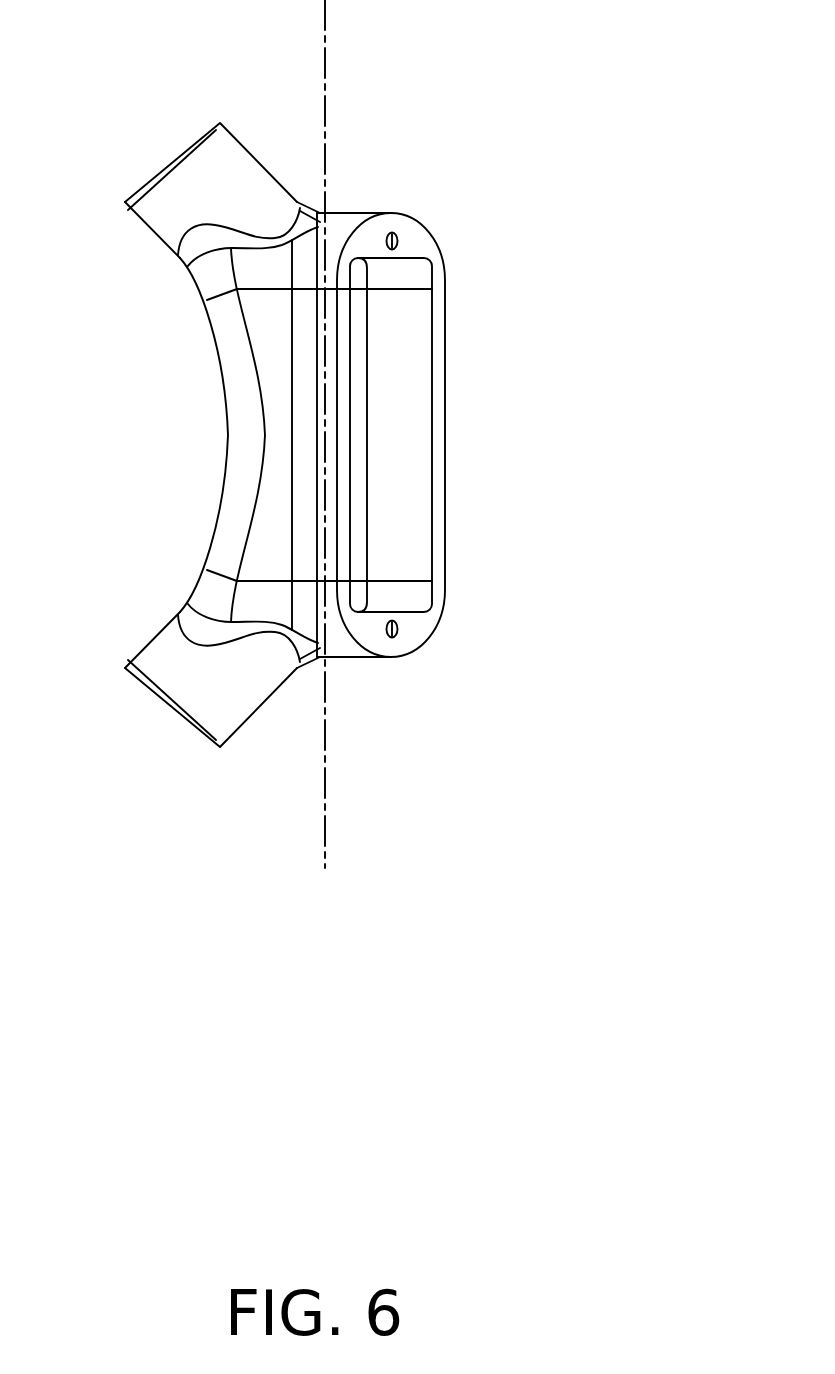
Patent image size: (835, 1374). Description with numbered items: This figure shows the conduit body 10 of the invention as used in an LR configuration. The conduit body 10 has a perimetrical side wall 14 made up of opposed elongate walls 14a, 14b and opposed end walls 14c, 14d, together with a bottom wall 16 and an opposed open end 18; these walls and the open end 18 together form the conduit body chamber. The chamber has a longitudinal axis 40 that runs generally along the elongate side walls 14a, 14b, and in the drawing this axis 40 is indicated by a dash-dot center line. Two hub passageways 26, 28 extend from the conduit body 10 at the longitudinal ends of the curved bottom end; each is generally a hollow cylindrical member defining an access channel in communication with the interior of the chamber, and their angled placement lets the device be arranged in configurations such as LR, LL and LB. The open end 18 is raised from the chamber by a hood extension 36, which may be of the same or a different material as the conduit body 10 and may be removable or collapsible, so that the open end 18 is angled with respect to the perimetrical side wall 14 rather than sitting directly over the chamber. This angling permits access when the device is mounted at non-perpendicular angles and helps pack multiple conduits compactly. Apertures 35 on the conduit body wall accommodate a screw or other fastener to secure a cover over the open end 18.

The conduit body 10 is at (532, 183).
The perimetrical side wall 14 is at (290, 493).
The elongate wall 14a is at (470, 447).
The elongate wall 14b is at (302, 330).
The end wall 14c is at (373, 213).
The end wall 14d is at (352, 658).
The bottom wall 16 is at (242, 435).
The open end 18 is at (382, 435).
The hub passageway 26 is at (187, 145).
The hub passageway 28 is at (188, 728).
The apertures 35 is at (398, 241).
The hood extension 36 is at (347, 212).
The longitudinal axis 40 is at (325, 835).